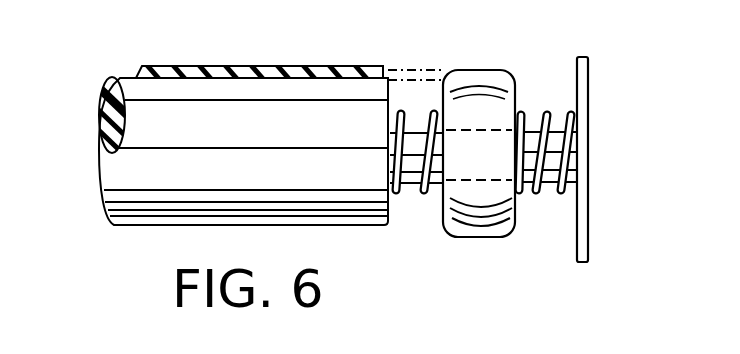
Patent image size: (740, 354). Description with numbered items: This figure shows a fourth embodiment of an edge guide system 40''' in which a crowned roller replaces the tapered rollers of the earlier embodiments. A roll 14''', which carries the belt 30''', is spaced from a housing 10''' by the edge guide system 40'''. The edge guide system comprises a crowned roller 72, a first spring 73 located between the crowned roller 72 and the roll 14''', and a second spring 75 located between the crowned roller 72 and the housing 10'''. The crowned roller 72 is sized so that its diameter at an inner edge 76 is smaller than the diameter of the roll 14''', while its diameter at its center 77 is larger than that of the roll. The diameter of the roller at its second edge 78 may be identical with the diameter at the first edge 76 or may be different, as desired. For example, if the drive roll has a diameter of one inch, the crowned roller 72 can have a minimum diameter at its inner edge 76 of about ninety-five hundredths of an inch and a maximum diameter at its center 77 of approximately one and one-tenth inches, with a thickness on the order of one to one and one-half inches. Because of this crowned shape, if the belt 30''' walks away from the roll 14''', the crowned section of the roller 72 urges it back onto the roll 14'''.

The roll 14''' is at (210, 180).
The belt 30''' is at (289, 40).
The first spring 73 is at (426, 190).
The crowned roller 72 is at (481, 92).
The second edge 78 is at (519, 82).
The inner edge 76 is at (440, 200).
The center 77 is at (483, 226).
The second spring 75 is at (537, 193).
The housing 10''' is at (627, 159).
The edge guide system 40''' is at (613, 42).